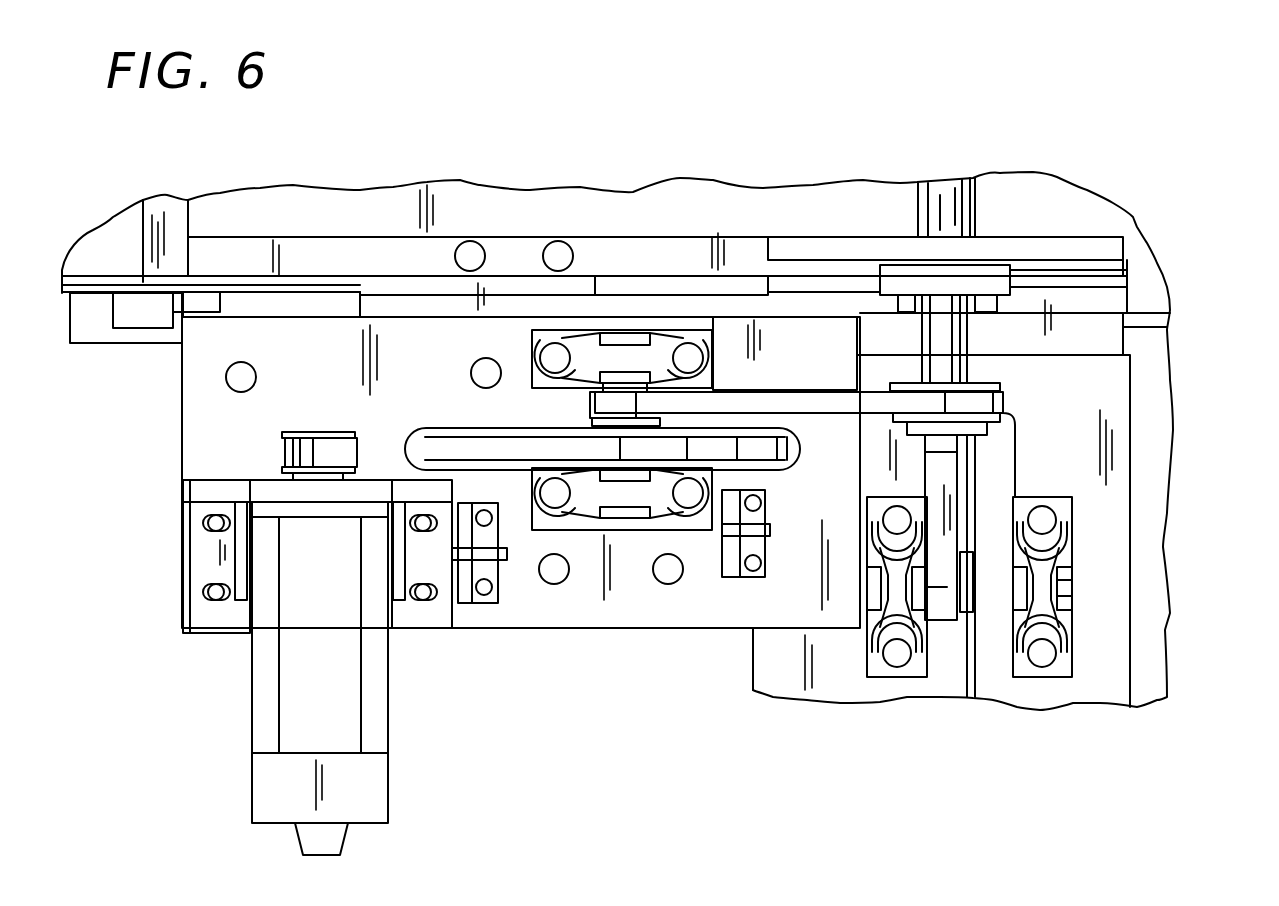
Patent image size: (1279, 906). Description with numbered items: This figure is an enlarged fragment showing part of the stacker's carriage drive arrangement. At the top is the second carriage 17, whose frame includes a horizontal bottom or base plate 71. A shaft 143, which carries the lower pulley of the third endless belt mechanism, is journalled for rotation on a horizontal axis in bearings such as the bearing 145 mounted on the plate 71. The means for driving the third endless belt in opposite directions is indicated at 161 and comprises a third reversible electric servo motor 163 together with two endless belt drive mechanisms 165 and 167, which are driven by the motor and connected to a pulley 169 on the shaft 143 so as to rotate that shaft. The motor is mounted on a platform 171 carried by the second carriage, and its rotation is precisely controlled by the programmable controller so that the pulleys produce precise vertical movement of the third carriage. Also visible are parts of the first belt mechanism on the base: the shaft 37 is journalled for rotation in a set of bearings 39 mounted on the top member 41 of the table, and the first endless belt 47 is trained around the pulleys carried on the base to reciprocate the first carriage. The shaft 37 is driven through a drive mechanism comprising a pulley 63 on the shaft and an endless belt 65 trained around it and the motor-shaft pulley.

The second carriage 17 is at (1062, 187).
The bottom plate 71 is at (636, 192).
The shaft 143 is at (978, 195).
The bearing 145 is at (1113, 248).
The platform 171 is at (182, 390).
The third reversible electric servo motor 163 is at (253, 680).
The means for driving the third endless belt 161 is at (260, 829).
The endless belt drive mechanism 165 is at (447, 432).
The endless belt drive mechanism 167 is at (830, 390).
The pulley 169 is at (987, 383).
The first endless belt 47 is at (960, 466).
The pulley 63 is at (963, 680).
The endless belt 65 is at (988, 682).
The bearings 39 is at (878, 680).
The shaft 37 is at (1073, 573).
The top member 41 is at (1137, 607).